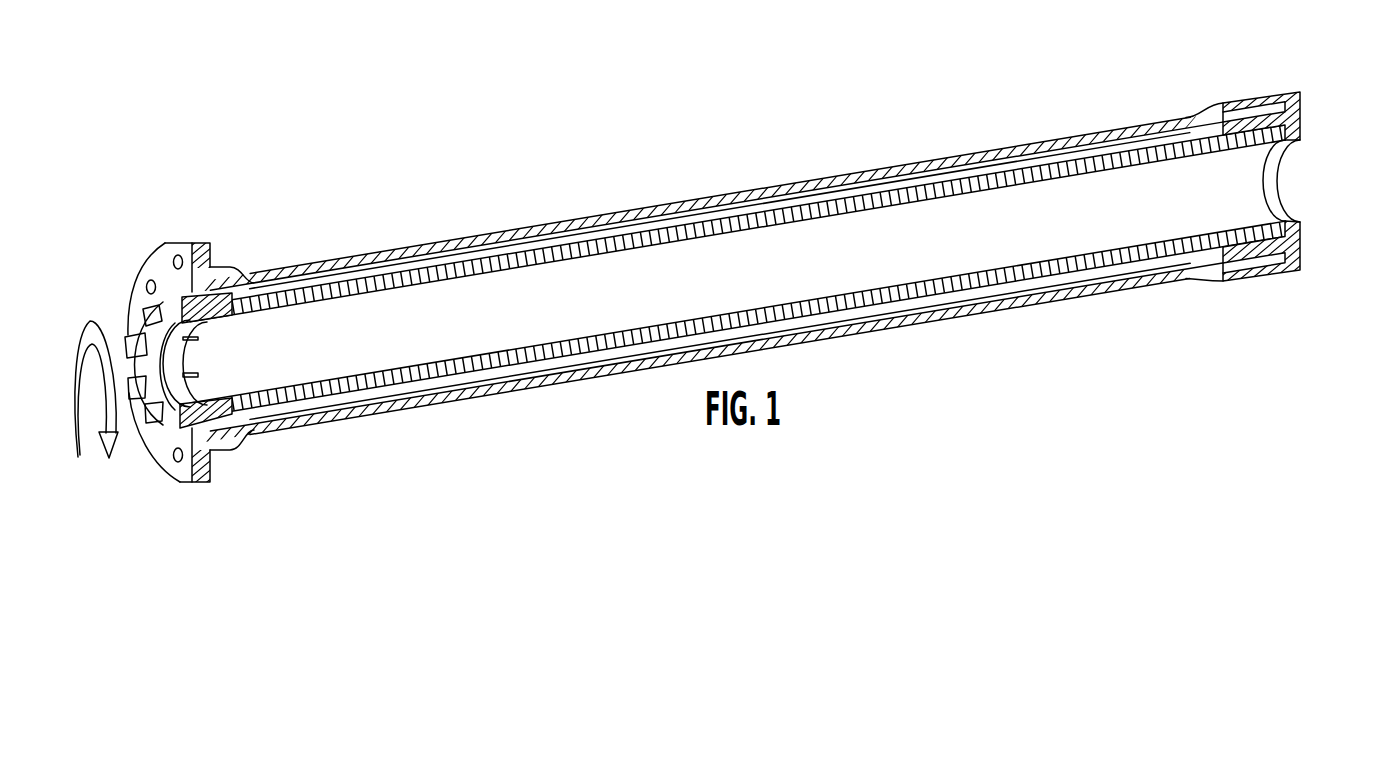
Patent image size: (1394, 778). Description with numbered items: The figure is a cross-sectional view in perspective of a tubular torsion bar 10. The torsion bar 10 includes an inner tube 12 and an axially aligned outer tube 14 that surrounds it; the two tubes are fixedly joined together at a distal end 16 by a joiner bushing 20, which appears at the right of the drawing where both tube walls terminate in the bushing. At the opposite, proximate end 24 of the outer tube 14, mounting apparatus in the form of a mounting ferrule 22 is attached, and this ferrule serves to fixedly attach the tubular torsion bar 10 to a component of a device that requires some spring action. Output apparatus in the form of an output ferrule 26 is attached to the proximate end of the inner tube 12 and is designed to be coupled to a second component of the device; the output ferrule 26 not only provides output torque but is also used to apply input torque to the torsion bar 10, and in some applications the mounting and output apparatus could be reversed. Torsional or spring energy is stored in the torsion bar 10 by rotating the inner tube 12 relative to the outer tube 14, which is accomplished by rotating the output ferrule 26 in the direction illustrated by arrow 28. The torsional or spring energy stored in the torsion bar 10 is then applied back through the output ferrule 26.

The tubular torsion bar 10 is at (893, 118).
The inner tube 12 is at (1058, 172).
The outer tube 14 is at (985, 157).
The distal end 16 is at (1262, 74).
The joiner bushing 20 is at (1300, 111).
The mounting ferrule 22 is at (163, 260).
The proximate end 24 is at (162, 221).
The output ferrule 26 is at (137, 322).
The arrow 28 is at (73, 408).